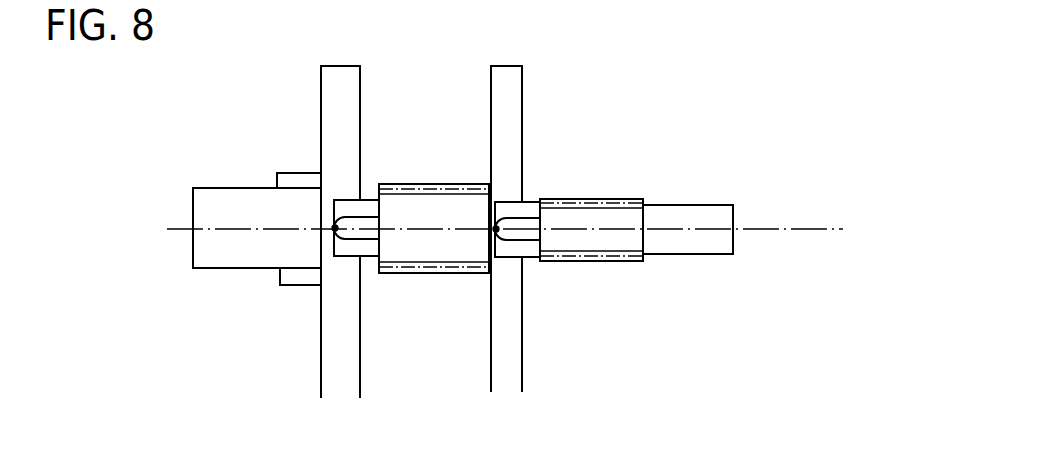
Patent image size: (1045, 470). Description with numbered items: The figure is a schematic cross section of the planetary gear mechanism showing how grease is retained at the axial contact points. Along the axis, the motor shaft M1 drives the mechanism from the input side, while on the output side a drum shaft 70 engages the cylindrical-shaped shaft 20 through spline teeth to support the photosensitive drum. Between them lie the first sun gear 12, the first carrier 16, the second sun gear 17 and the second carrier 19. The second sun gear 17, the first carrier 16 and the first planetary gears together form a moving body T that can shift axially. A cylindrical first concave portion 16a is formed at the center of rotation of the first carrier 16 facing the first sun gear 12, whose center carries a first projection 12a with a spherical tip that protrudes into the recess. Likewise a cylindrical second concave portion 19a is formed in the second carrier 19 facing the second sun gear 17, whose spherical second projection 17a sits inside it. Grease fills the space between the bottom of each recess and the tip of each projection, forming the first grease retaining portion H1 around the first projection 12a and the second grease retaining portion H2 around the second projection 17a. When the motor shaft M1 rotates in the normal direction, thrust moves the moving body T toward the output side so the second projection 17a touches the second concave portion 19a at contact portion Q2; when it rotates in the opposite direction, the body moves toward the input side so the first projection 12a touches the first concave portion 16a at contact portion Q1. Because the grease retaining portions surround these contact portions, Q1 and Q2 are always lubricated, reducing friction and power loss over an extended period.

The drum shaft 70 is at (228, 188).
The cylindrical-shaped shaft 20 is at (292, 173).
The second carrier 19 is at (340, 66).
The second concave portion 19a is at (365, 200).
The second sun gear 17 is at (443, 184).
The second projection 17a is at (352, 240).
The first carrier 16 is at (505, 66).
The first concave portion 16a is at (532, 202).
The first sun gear 12 is at (610, 199).
The first projection 12a is at (530, 240).
The motor shaft M1 is at (683, 254).
The moving body T is at (542, 79).
The first grease retaining portion H1 is at (496, 231).
The second grease retaining portion H2 is at (336, 242).
The contact portion Q1 is at (503, 250).
The contact portion Q2 is at (343, 257).